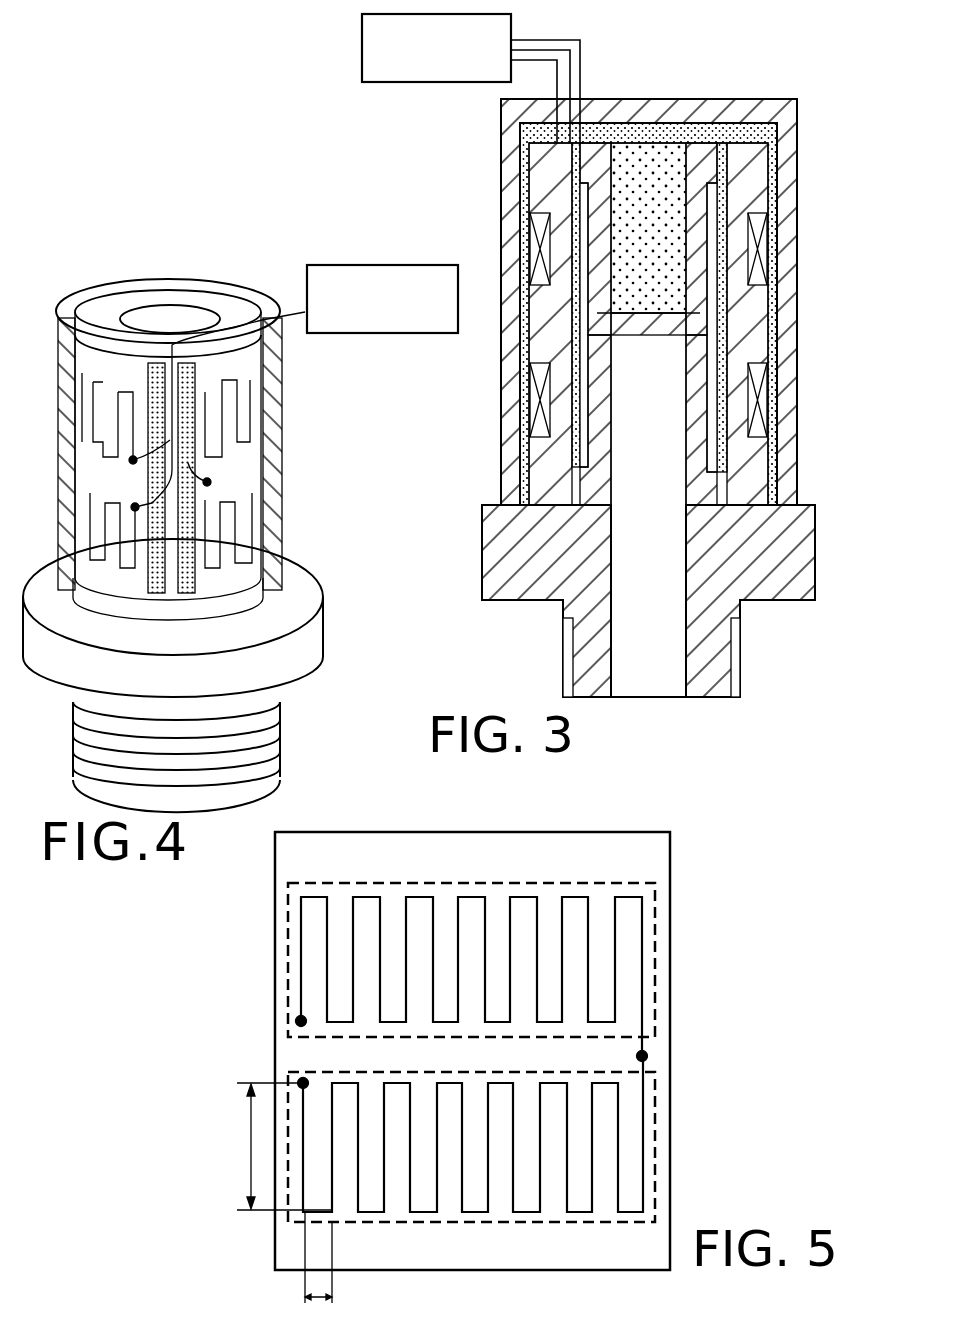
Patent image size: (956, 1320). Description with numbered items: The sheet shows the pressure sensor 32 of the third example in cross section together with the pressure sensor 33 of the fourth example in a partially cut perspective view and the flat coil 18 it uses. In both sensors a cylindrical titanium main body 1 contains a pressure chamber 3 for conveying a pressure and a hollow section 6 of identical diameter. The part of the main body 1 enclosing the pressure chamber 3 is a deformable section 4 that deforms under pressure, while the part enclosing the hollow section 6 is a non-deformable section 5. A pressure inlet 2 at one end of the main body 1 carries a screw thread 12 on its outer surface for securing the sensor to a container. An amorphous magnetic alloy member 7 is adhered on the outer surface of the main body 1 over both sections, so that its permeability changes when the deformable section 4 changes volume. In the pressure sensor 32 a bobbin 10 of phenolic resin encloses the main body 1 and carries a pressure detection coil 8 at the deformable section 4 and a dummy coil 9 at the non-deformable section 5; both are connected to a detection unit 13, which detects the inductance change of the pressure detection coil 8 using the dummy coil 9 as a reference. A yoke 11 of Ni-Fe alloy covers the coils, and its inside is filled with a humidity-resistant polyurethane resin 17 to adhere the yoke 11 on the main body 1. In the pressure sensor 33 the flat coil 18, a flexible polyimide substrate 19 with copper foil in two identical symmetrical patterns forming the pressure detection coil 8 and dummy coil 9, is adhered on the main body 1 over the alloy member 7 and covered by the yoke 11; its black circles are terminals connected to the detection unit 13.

In FIG. 3, the main body 1 is at (818, 556).
In FIG. 4, the main body 1 is at (283, 656).
In FIG. 3, the pressure inlet 2 is at (655, 699).
In FIG. 5, the pressure inlet 2 is at (318, 1257).
In FIG. 3, the pressure chamber 3 is at (677, 418).
In FIG. 3, the deformable section 4 is at (697, 461).
In FIG. 3, the non-deformable section 5 is at (697, 211).
In FIG. 3, the hollow section 6 is at (672, 276).
In FIG. 4, the hollow section 6 is at (177, 316).
In FIG. 3, the amorphous magnetic alloy member 7 is at (718, 304).
In FIG. 4, the amorphous magnetic alloy member 7 is at (188, 462).
In FIG. 3, the pressure detection coil 8 is at (758, 370).
In FIG. 4, the pressure detection coil 8 is at (240, 531).
In FIG. 5, the pressure detection coil 8 is at (655, 1170).
In FIG. 3, the dummy coil 9 is at (760, 242).
In FIG. 4, the dummy coil 9 is at (240, 410).
In FIG. 5, the dummy coil 9 is at (655, 960).
In FIG. 3, the bobbin 10 is at (752, 168).
In FIG. 5, the bobbin 10 is at (278, 1146).
In FIG. 3, the yoke 11 is at (738, 103).
In FIG. 4, the yoke 11 is at (270, 438).
In FIG. 3, the screw thread 12 is at (742, 663).
In FIG. 4, the screw thread 12 is at (253, 758).
In FIG. 3, the detection unit 13 is at (512, 25).
In FIG. 4, the detection unit 13 is at (390, 265).
In FIG. 3, the resin 17 is at (528, 133).
In FIG. 4, the flat coil 18 is at (238, 366).
In FIG. 5, the flat coil 18 is at (548, 875).
In FIG. 5, the polyimide substrate 19 is at (480, 845).
In FIG. 3, the pressure sensor 32 is at (834, 38).
In FIG. 4, the pressure sensor 33 is at (389, 218).